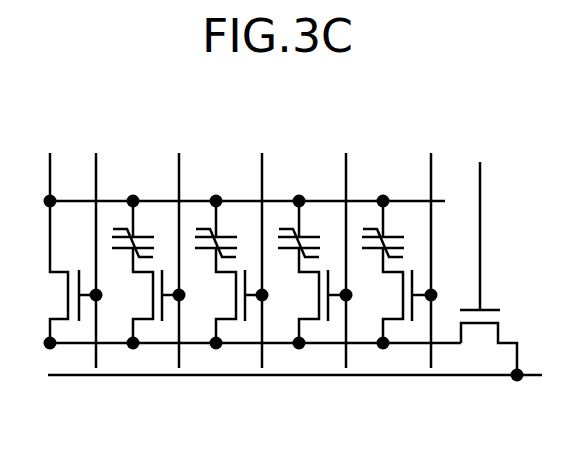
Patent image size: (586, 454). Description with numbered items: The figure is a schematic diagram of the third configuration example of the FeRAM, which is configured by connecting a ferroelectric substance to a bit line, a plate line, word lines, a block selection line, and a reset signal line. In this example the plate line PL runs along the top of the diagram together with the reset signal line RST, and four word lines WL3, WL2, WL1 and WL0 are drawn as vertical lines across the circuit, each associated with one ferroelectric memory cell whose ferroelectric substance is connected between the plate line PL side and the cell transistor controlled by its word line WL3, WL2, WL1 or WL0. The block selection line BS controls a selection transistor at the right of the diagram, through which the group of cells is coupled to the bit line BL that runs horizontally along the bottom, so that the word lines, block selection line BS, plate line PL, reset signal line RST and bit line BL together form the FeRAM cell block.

The plate line PL is at (50, 234).
The reset signal line RST is at (98, 247).
The word line WL3 is at (182, 247).
The word line WL2 is at (262, 247).
The word line WL1 is at (348, 247).
The word line WL0 is at (430, 247).
The block selection line BS is at (488, 250).
The bit line BL is at (295, 395).